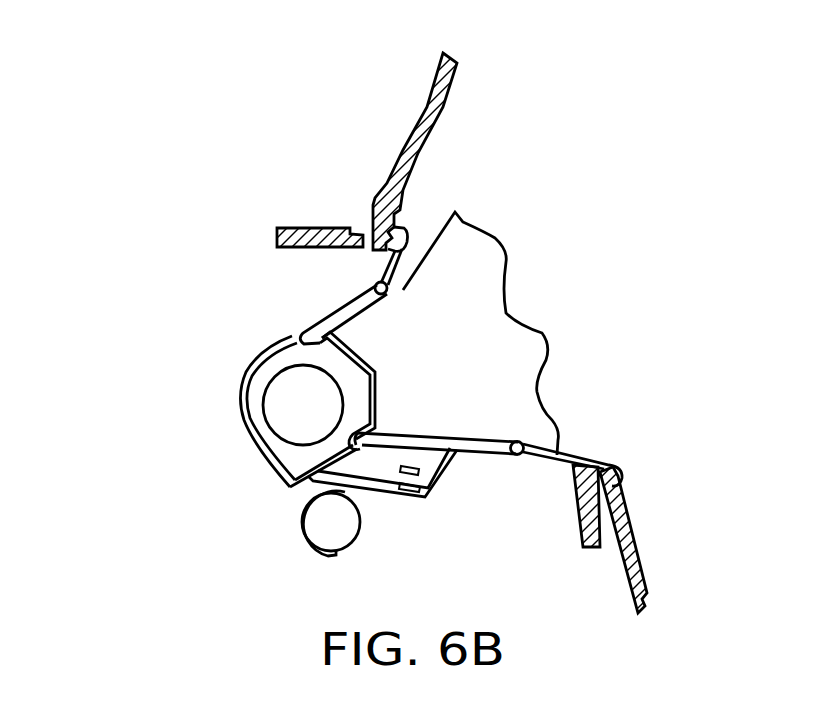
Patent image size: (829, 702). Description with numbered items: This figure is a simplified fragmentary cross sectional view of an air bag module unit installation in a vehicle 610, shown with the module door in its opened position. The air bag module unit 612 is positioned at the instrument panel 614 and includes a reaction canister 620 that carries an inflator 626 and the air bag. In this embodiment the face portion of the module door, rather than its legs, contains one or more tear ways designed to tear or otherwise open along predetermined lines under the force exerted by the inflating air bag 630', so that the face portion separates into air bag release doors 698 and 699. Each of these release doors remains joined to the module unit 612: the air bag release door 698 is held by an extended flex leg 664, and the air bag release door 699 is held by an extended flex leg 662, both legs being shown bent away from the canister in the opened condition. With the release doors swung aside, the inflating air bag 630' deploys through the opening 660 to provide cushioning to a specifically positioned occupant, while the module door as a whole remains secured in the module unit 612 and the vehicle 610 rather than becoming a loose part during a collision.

The vehicle 610 is at (296, 122).
The air bag module unit 612 is at (198, 358).
The instrument panel 614 is at (288, 230).
The reaction canister 620 is at (285, 453).
The inflator 626 is at (328, 421).
The inflating air bag 630' is at (496, 325).
The opening 660 is at (362, 258).
The extended flex leg 662 is at (608, 463).
The extended flex leg 664 is at (403, 226).
The air bag release door 698 is at (403, 113).
The air bag release door 699 is at (624, 550).